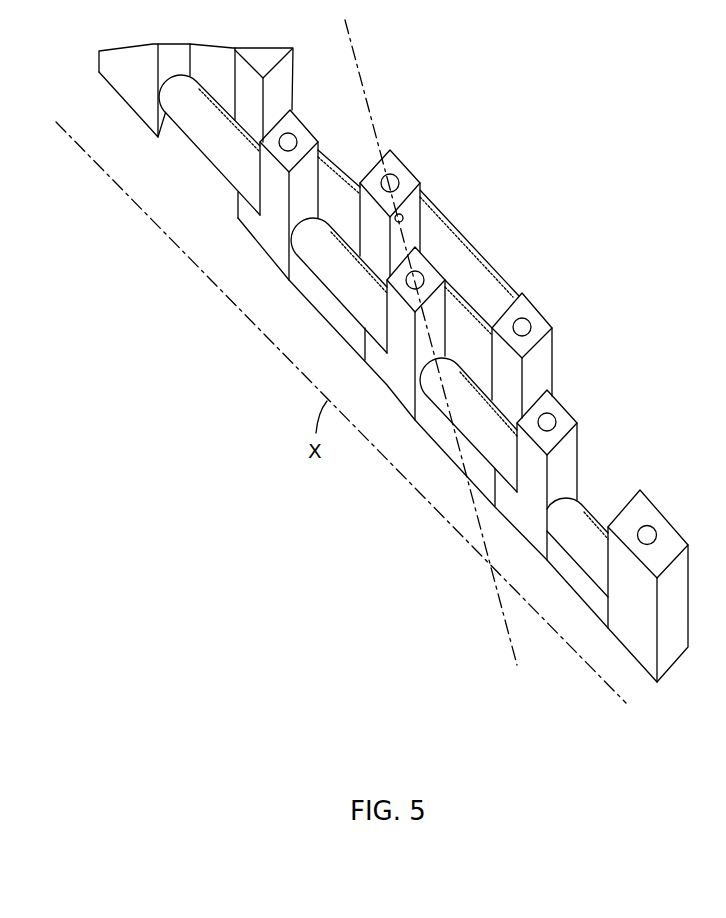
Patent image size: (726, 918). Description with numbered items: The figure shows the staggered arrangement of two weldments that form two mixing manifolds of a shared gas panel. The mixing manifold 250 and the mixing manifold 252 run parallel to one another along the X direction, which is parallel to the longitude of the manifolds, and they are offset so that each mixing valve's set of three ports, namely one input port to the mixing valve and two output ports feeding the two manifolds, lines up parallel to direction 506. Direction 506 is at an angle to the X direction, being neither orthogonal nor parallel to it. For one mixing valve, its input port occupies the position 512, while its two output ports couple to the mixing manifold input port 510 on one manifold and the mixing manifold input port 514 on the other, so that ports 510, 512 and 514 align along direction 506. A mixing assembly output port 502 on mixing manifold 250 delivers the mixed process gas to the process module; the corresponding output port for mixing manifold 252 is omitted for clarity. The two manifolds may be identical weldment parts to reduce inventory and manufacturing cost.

The mixing manifold 250 is at (196, 128).
The mixing manifold 252 is at (333, 179).
The mixing assembly output port 502 is at (671, 540).
The direction 506 is at (371, 98).
The mixing manifold input port 510 is at (391, 176).
The mixing valve input port position 512 is at (403, 215).
The mixing manifold input port 514 is at (423, 274).